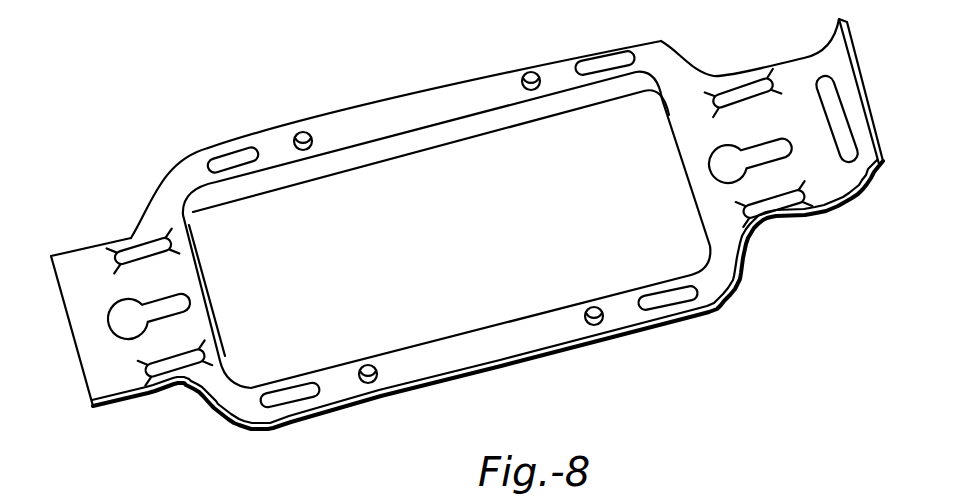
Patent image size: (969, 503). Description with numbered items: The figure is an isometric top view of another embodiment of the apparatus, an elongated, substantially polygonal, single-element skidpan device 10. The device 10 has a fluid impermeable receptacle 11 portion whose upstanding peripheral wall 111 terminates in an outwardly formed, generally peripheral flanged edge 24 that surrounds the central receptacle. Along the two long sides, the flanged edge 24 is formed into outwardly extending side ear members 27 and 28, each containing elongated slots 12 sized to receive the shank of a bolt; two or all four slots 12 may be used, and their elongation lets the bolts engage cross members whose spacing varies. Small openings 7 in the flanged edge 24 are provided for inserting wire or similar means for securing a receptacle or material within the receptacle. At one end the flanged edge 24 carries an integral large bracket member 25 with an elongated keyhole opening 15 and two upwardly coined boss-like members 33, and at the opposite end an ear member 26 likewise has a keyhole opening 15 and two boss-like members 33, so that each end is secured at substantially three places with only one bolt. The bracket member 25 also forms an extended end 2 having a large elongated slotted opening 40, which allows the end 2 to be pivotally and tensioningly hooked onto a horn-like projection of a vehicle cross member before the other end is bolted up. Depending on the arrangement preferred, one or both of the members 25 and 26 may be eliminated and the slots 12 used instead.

The extended end 2 is at (822, 55).
The openings 7 is at (298, 132).
The skidpan single element apparatus device 10 is at (620, 333).
The fluid impermeable receptacle 11 is at (412, 167).
The elongated slots 12 is at (232, 157).
The keyhole opening 15 is at (122, 327).
The peripheral flanged edge 24 is at (443, 360).
The large bracket member 25 is at (814, 202).
The ear member 26 is at (78, 262).
The side ear member 27 is at (340, 118).
The side ear member 28 is at (510, 340).
The upwardly coined boss-like members 33 is at (137, 246).
The elongated slotted opening 40 is at (836, 103).
The upstanding peripheral wall 111 is at (263, 173).